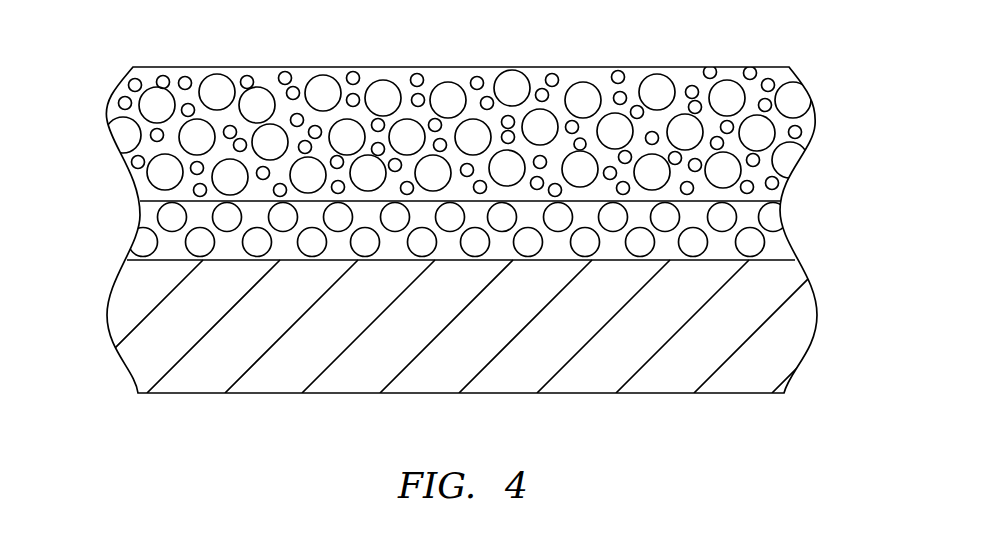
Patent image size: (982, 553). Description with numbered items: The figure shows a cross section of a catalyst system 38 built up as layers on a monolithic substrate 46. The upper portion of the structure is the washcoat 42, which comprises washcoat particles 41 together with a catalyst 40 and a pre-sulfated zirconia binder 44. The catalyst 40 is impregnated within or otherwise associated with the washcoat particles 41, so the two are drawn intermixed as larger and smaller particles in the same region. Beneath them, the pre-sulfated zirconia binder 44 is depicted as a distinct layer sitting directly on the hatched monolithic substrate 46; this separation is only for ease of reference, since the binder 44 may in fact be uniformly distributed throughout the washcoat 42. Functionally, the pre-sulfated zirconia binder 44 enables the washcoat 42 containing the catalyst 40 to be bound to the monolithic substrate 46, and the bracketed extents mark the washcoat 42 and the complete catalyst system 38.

The catalyst system 38 is at (815, 65).
The catalyst 40 is at (512, 78).
The washcoat particles 41 is at (351, 72).
The washcoat 42 is at (103, 67).
The pre-sulfated zirconia binder 44 is at (180, 252).
The monolithic substrate 46 is at (182, 328).